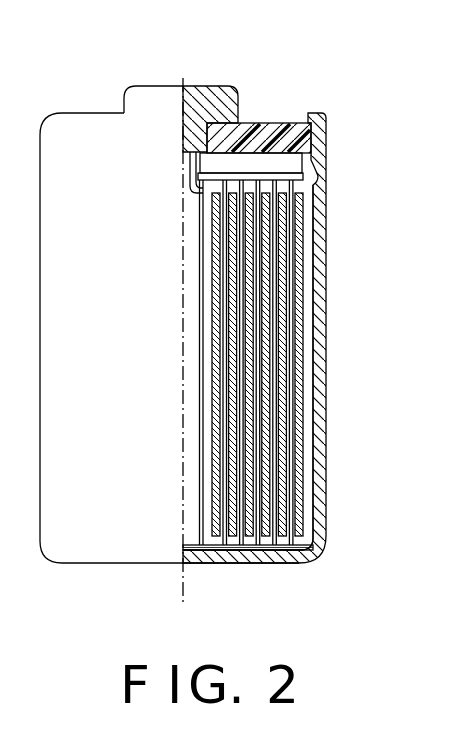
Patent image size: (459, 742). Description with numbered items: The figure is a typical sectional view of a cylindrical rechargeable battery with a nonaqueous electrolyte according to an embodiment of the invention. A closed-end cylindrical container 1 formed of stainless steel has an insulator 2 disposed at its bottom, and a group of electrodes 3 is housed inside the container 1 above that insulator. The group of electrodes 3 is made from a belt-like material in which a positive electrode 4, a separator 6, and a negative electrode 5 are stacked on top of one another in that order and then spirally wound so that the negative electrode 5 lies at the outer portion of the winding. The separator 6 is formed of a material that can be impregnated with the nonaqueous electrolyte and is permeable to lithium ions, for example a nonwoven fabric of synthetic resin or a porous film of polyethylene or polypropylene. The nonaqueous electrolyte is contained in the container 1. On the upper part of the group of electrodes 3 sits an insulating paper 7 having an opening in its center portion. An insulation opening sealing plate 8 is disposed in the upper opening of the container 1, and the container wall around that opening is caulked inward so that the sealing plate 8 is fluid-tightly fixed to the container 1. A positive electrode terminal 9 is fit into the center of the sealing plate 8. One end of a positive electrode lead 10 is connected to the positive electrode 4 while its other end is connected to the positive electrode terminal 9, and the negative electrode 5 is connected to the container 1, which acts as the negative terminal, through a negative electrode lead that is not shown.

The container 1 is at (318, 463).
The insulator 2 is at (288, 548).
The group of electrodes 3 is at (309, 362).
The positive electrode 4 is at (283, 262).
The negative electrode 5 is at (385, 245).
The separator 6 is at (290, 293).
The insulating paper 7 is at (300, 178).
The insulation opening sealing plate 8 is at (268, 130).
The positive electrode terminal 9 is at (213, 93).
The positive electrode lead 10 is at (196, 176).